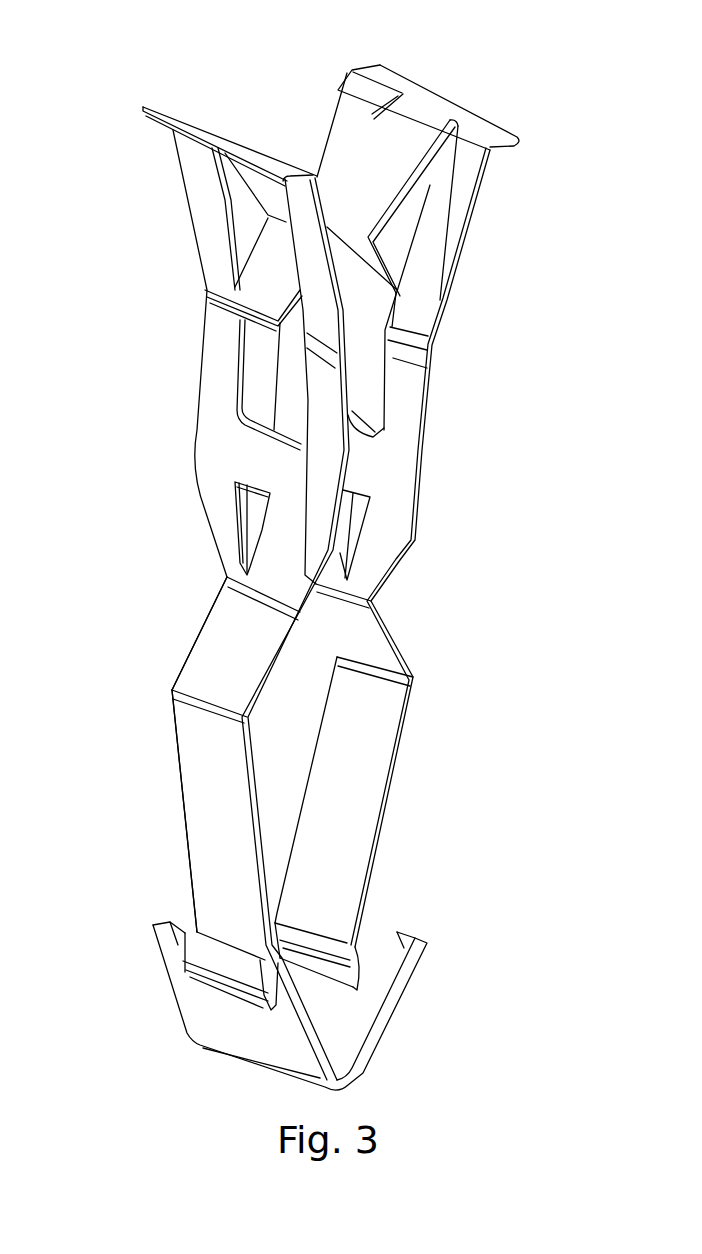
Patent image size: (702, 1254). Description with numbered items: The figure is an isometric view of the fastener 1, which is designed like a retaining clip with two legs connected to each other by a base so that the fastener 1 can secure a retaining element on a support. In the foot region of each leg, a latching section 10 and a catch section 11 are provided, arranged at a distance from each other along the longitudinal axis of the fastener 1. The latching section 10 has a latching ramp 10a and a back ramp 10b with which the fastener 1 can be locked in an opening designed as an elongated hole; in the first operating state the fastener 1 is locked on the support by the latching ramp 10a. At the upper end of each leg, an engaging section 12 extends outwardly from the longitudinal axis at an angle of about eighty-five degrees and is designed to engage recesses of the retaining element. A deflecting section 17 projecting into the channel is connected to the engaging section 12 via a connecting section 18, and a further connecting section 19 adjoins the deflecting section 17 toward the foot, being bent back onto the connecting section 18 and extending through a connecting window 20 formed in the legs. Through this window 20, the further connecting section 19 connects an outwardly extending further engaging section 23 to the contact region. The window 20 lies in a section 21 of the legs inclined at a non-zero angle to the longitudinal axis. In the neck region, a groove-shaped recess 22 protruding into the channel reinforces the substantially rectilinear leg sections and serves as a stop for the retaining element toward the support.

The fastener 1 is at (470, 505).
The latching section 10 is at (162, 672).
The latching ramp 10a is at (208, 616).
The back ramp 10b is at (195, 787).
The catch section 11 is at (147, 915).
The engaging section 12 is at (180, 108).
The deflecting section 17 is at (400, 290).
The connecting section 18 is at (452, 220).
The further connecting section 19 is at (372, 298).
The connecting window 20 is at (256, 377).
The section of the legs 21 is at (355, 225).
The groove-shaped recess 22 is at (253, 513).
The further engaging section 23 is at (208, 291).